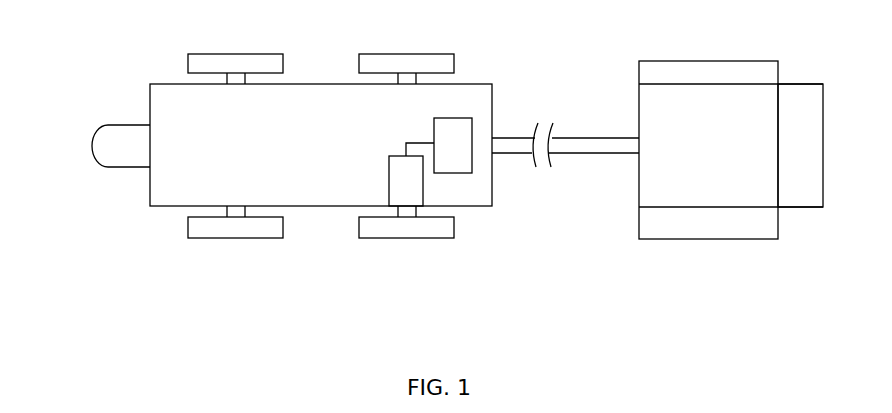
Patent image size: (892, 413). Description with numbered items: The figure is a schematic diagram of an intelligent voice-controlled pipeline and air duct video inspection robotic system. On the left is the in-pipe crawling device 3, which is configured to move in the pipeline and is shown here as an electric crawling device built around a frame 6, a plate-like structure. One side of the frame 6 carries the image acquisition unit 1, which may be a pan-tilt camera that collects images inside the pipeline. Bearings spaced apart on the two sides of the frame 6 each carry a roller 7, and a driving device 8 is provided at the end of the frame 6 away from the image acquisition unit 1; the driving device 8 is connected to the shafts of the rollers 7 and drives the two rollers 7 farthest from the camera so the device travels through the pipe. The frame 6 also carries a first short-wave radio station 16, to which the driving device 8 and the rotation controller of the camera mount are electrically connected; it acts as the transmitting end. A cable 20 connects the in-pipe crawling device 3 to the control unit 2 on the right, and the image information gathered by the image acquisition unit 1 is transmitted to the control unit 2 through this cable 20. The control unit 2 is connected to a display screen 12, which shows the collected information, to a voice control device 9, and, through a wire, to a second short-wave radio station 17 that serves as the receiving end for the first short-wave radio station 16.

The image acquisition unit 1 is at (125, 143).
The control unit 2 is at (701, 103).
The in-pipe crawling device 3 is at (284, 179).
The frame 6 is at (200, 167).
The rollers 7 is at (235, 251).
The driving device 8 is at (406, 197).
The voice control device 9 is at (804, 100).
The display screen 12 is at (729, 72).
The first short-wave radio station 16 is at (453, 162).
The second short-wave radio station 17 is at (715, 223).
The cable 20 is at (577, 150).